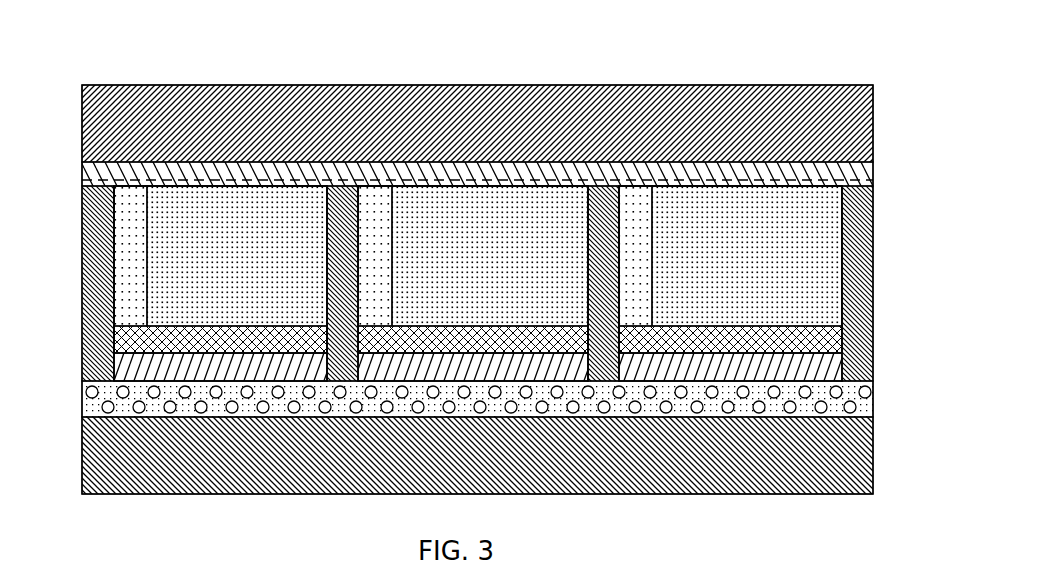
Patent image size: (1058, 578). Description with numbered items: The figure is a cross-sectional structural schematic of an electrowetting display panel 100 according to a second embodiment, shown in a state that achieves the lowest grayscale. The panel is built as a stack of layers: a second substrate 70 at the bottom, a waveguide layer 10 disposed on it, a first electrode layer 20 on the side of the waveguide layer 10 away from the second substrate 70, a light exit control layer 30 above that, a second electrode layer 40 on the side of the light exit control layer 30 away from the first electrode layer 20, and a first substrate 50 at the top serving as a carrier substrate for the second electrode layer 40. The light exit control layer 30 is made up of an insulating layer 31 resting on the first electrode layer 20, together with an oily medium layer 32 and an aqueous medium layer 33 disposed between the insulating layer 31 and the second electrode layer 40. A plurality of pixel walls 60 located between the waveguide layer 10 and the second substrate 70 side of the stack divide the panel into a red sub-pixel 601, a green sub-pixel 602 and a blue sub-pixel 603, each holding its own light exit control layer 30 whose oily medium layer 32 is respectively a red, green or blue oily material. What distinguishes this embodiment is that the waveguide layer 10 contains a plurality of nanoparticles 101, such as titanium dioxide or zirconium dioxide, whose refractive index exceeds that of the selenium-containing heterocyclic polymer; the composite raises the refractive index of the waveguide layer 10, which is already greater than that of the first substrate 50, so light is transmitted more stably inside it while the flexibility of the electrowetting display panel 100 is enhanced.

The electrowetting display panel 100 is at (95, 55).
The red sub-pixel 601 is at (243, 183).
The green sub-pixel 602 is at (485, 180).
The blue sub-pixel 603 is at (742, 180).
The first substrate 50 is at (873, 132).
The second electrode layer 40 is at (873, 178).
The pixel walls 60 is at (873, 225).
The light exit control layer 30 is at (926, 266).
The aqueous medium layer 33 is at (827, 273).
The oily medium layer 32 is at (640, 311).
The insulating layer 31 is at (873, 330).
The first electrode layer 20 is at (840, 370).
The waveguide layer 10 is at (514, 404).
The nanoparticles 101 is at (846, 407).
The second substrate 70 is at (873, 460).